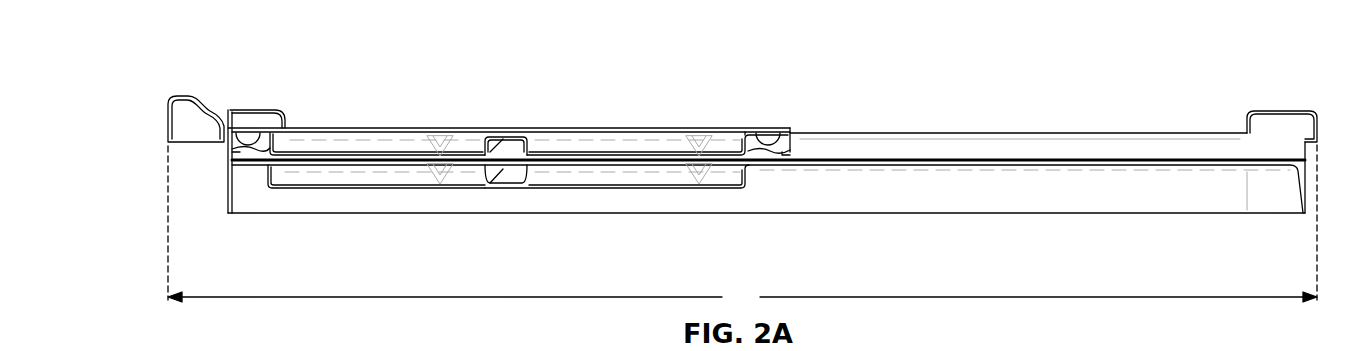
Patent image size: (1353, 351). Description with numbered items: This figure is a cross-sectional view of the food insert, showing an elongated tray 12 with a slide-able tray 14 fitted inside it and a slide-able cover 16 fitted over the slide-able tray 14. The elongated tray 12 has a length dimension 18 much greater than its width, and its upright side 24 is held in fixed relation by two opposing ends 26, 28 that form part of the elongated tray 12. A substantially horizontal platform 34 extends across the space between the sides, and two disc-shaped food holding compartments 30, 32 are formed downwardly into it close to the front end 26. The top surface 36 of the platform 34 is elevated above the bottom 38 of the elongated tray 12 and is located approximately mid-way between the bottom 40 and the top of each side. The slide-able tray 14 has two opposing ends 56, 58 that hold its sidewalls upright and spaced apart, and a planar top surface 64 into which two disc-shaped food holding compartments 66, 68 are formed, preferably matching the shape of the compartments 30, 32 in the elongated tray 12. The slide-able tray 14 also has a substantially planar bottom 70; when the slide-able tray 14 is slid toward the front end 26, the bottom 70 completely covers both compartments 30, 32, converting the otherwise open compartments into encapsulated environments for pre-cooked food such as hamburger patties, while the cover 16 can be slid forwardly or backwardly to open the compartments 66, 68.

The elongated tray 12 is at (1277, 111).
The slide-able tray 14 is at (780, 140).
The slide-able cover 16 is at (722, 128).
The length dimension 18 is at (742, 228).
The upright side 24 is at (1080, 133).
The front end 26 is at (240, 109).
The end 28 is at (1291, 109).
The food holding compartment 30 is at (285, 180).
The food holding compartment 32 is at (563, 173).
The platform 34 is at (947, 157).
The top surface of the platform 36 is at (908, 168).
The bottom of the elongated tray 38 is at (1148, 133).
The bottom of each side 40 is at (1182, 214).
The end of the slide-able tray 56 is at (783, 155).
The end of the slide-able tray 58 is at (232, 148).
The planar top surface 64 is at (510, 138).
The food holding compartment 66 is at (346, 137).
The food holding compartment 68 is at (592, 148).
The bottom of the slide-able tray 70 is at (342, 163).